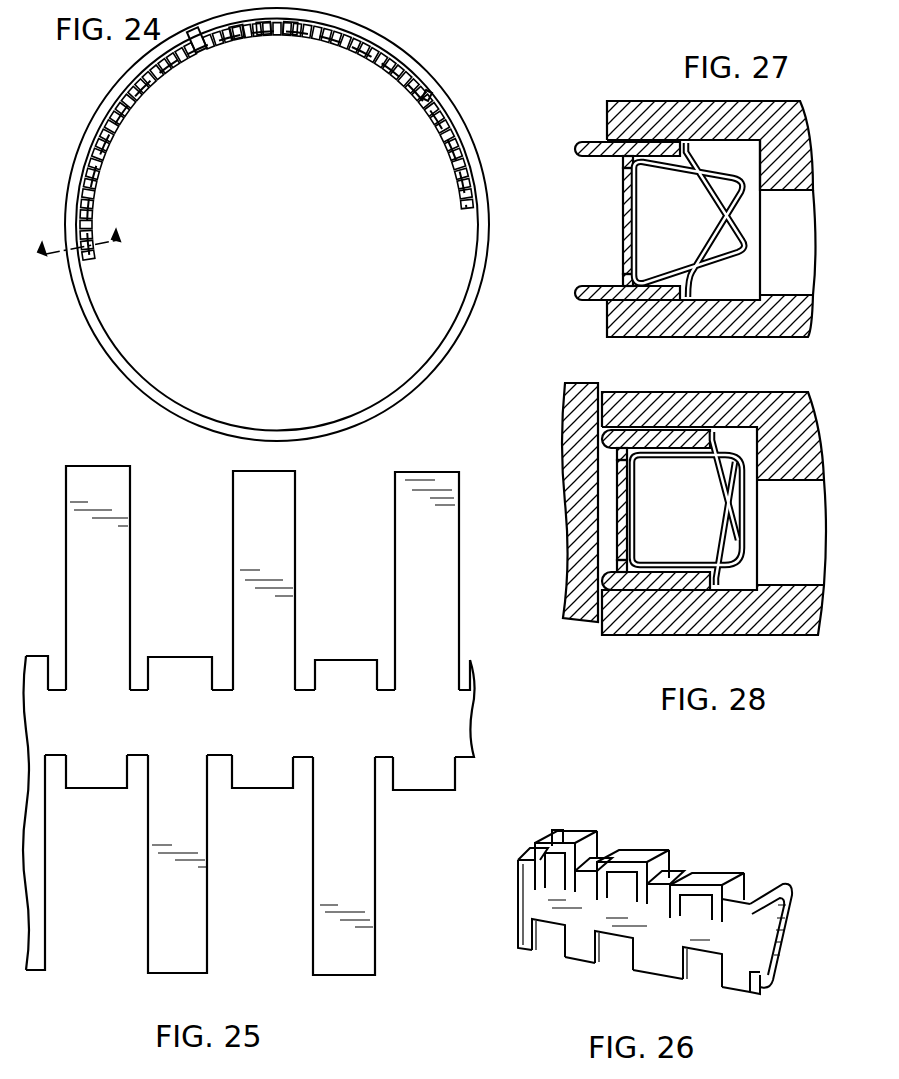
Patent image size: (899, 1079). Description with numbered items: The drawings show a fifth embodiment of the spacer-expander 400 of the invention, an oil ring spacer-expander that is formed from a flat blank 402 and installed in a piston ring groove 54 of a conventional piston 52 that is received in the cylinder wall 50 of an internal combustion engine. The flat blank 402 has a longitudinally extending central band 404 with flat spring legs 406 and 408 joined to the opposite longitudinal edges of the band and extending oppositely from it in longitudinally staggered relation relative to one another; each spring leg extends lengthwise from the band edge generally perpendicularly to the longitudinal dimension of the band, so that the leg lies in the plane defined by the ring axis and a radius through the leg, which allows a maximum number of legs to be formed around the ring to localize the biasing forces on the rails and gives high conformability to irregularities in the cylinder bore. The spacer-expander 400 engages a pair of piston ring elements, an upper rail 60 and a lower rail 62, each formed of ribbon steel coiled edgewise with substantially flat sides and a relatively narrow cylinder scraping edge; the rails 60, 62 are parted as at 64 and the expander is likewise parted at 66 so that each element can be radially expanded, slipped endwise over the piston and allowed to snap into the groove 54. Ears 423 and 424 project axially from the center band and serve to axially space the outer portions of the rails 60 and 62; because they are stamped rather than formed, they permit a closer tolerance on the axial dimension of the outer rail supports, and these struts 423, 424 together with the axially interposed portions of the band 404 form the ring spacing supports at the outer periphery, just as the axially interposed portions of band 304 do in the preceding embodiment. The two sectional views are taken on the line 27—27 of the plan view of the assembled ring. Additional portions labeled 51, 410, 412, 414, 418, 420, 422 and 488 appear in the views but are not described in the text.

In FIG. 24, the section line 27 is at (87, 258).
In FIG. 28, the cylinder wall 50 is at (608, 396).
In FIG. 27, the top wall 51 is at (634, 100).
In FIG. 28, the piston 52 is at (690, 403).
In FIG. 27, the piston ring groove 54 is at (795, 115).
In FIG. 24, the upper rail 60 is at (470, 150).
In FIG. 27, the upper rail 60 is at (589, 141).
In FIG. 28, the upper rail 60 is at (600, 437).
In FIG. 24, the lower rail 62 is at (450, 108).
In FIG. 27, the lower rail 62 is at (590, 302).
In FIG. 28, the lower rail 62 is at (592, 598).
In FIG. 24, the rail parting 64 is at (201, 26).
In FIG. 24, the expander parting 66 is at (283, 30).
In FIG. 24, the band 304 is at (436, 94).
In FIG. 24, the spacer-expander 400 is at (418, 104).
In FIG. 27, the spacer-expander 400 is at (678, 239).
In FIG. 26, the spacer-expander 400 is at (644, 915).
In FIG. 25, the flat blank 402 is at (361, 980).
In FIG. 25, the central band 404 is at (446, 736).
In FIG. 27, the central band 404 is at (622, 198).
In FIG. 28, the central band 404 is at (617, 492).
In FIG. 26, the central band 404 is at (755, 951).
In FIG. 25, the flat spring leg 406 is at (314, 891).
In FIG. 27, the flat spring leg 406 is at (733, 268).
In FIG. 28, the flat spring leg 406 is at (747, 540).
In FIG. 26, the flat spring leg 406 is at (645, 860).
In FIG. 25, the flat spring leg 408 is at (395, 535).
In FIG. 27, the flat spring leg 408 is at (656, 174).
In FIG. 28, the flat spring leg 408 is at (690, 466).
In FIG. 26, the flat spring leg 408 is at (690, 852).
In FIG. 27, the upper tab 410 is at (693, 150).
In FIG. 26, the upper tab 410 is at (585, 822).
In FIG. 27, the lower tab 412 is at (706, 300).
In FIG. 26, the lower tab 412 is at (766, 988).
In FIG. 27, the slot 414 is at (620, 262).
In FIG. 28, the loop bottom arm 418 is at (684, 548).
In FIG. 27, the lower bend 420 is at (741, 248).
In FIG. 27, the upper bend 422 is at (727, 240).
In FIG. 25, the ear 423 is at (78, 788).
In FIG. 27, the ear 423 is at (622, 280).
In FIG. 28, the ear 423 is at (617, 565).
In FIG. 26, the ear 423 is at (576, 957).
In FIG. 25, the ear 424 is at (37, 656).
In FIG. 27, the ear 424 is at (622, 166).
In FIG. 28, the ear 424 is at (617, 453).
In FIG. 26, the ear 424 is at (556, 856).
In FIG. 26, the end hook 488 is at (776, 894).